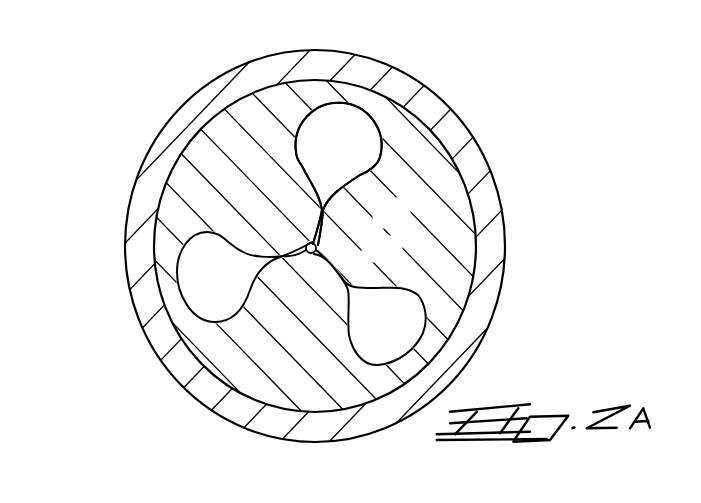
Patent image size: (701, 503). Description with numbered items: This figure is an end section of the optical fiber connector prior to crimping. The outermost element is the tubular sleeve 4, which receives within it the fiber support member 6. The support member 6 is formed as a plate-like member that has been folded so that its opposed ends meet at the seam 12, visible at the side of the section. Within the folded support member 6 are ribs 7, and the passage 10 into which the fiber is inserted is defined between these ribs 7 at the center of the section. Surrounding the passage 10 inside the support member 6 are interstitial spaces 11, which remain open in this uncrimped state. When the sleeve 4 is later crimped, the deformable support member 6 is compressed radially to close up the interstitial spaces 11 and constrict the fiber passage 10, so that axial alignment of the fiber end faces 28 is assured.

The tubular sleeve 4 is at (140, 190).
The fiber support member 6 is at (273, 92).
The ribs 7 is at (313, 172).
The interstitial spaces 11 is at (358, 153).
The seam 12 is at (177, 288).
The passage 10 is at (318, 233).
The end faces 28 is at (316, 248).